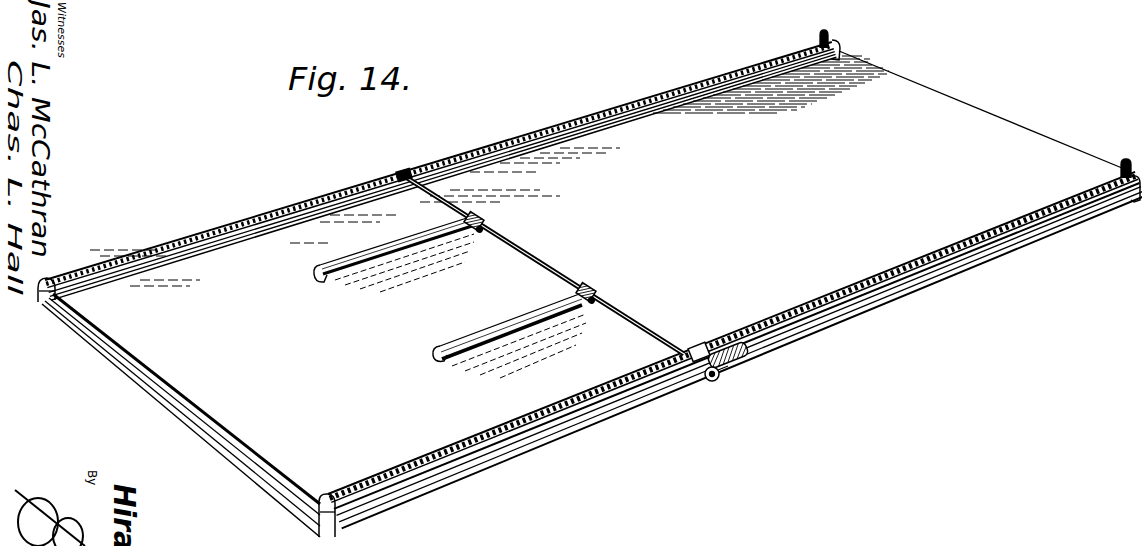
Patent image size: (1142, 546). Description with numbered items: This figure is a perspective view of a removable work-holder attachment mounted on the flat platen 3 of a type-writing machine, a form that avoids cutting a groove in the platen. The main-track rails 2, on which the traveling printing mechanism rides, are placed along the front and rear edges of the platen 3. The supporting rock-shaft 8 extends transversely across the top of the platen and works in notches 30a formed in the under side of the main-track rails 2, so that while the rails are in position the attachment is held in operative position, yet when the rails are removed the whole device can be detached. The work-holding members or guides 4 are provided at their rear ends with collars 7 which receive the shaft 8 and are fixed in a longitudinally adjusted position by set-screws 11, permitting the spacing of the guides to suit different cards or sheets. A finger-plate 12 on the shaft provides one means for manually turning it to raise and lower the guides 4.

The main-track rails 2 is at (558, 122).
The flat platen 3 is at (582, 294).
The work-holding members or guides 4 is at (362, 257).
The collars 7 is at (474, 215).
The supporting rock-shaft 8 is at (526, 241).
The set-screws 11 is at (594, 289).
The finger-plate 12 is at (746, 364).
The notches 30a is at (689, 398).